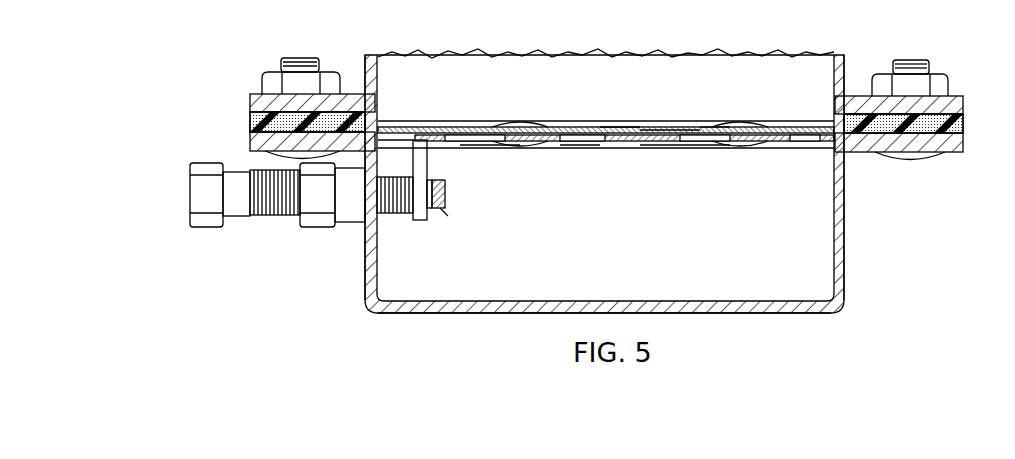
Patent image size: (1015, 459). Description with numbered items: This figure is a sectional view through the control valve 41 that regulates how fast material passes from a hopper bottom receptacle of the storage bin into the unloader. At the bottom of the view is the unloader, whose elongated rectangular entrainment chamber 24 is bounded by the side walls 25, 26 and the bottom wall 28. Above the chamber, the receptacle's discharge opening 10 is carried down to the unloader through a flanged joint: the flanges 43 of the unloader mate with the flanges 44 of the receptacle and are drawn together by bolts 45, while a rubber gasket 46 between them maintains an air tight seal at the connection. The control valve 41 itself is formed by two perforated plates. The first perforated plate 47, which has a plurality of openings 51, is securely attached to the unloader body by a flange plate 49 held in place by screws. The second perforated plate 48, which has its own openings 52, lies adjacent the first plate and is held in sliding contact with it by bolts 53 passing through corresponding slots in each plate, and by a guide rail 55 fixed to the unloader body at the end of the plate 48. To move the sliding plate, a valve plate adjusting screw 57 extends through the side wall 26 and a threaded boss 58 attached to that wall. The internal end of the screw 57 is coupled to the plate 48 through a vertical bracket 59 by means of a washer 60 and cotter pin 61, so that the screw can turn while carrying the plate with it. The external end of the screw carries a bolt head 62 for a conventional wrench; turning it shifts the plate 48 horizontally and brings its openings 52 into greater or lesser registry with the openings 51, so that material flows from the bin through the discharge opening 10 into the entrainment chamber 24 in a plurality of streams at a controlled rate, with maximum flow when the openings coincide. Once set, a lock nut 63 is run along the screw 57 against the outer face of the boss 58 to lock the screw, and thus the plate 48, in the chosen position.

The discharge opening 10 is at (800, 68).
The entrainment chamber 24 is at (815, 265).
The side wall 25 is at (845, 207).
The side wall 26 is at (365, 267).
The bottom wall 28 is at (413, 313).
The control valve 41 is at (556, 135).
The flanges 43 is at (250, 144).
The flanges 44 is at (250, 101).
The bolts 45 is at (270, 78).
The rubber gasket 46 is at (250, 123).
The perforated plate 47 is at (668, 128).
The perforated plate 48 is at (704, 146).
The flange plate 49 is at (396, 127).
The openings 51 is at (615, 128).
The openings 52 is at (566, 146).
The bolts 53 is at (518, 122).
The guide rail 55 is at (490, 146).
The valve plate adjusting screw 57 is at (258, 215).
The threaded boss 58 is at (345, 222).
The vertical bracket 59 is at (427, 160).
The washer 60 is at (429, 222).
The cotter pin 61 is at (450, 210).
The bolt head 62 is at (205, 228).
The lock nut 63 is at (305, 227).